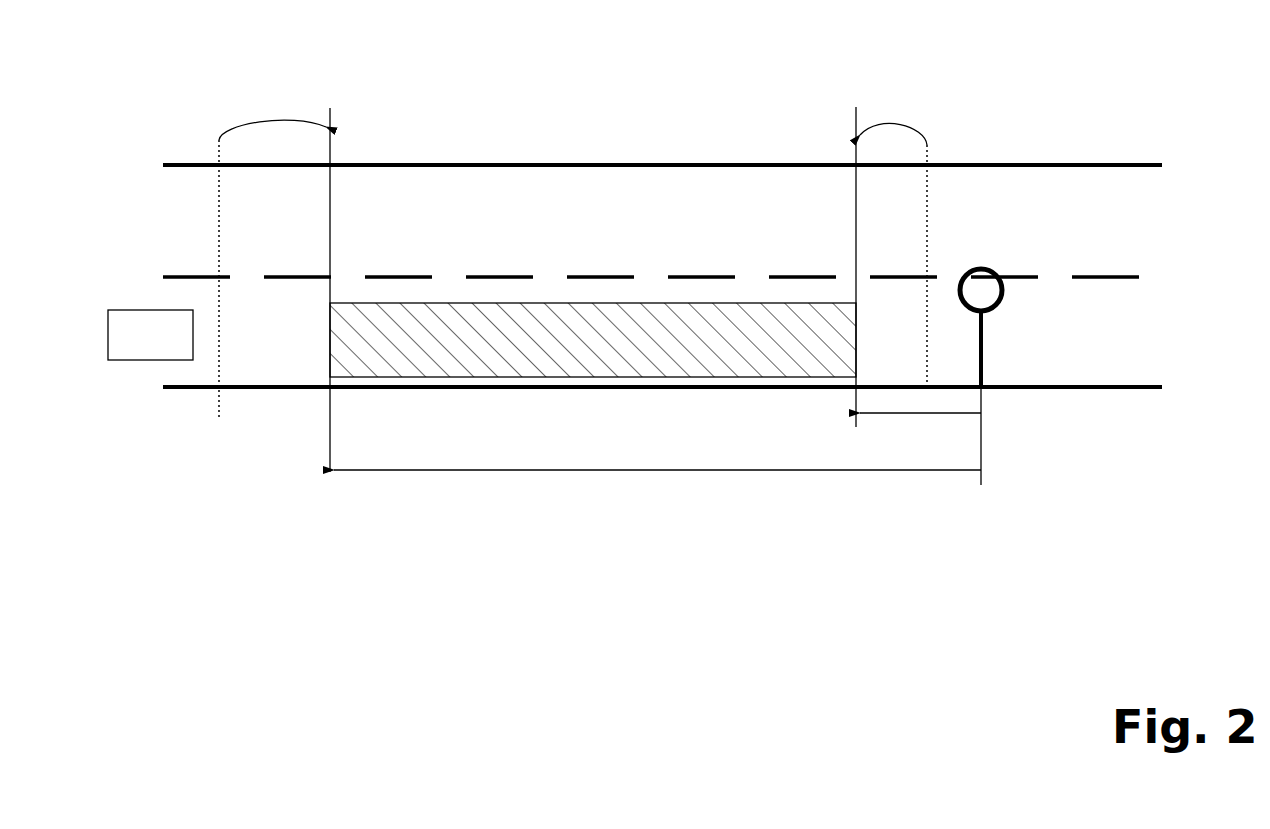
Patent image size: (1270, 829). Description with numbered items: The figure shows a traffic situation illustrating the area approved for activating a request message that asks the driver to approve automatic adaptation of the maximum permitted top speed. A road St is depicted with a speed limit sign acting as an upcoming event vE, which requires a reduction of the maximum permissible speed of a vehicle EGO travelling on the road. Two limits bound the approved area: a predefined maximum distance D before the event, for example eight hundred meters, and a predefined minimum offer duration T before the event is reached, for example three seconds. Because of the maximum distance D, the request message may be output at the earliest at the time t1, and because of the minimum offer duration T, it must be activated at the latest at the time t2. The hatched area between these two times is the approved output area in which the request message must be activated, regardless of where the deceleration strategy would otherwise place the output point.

The road St is at (1023, 165).
The vehicle EGO is at (163, 278).
The time t1 is at (330, 122).
The time t2 is at (856, 113).
The upcoming event vE is at (993, 267).
The minimum offer duration T is at (920, 431).
The maximum distance D is at (657, 492).